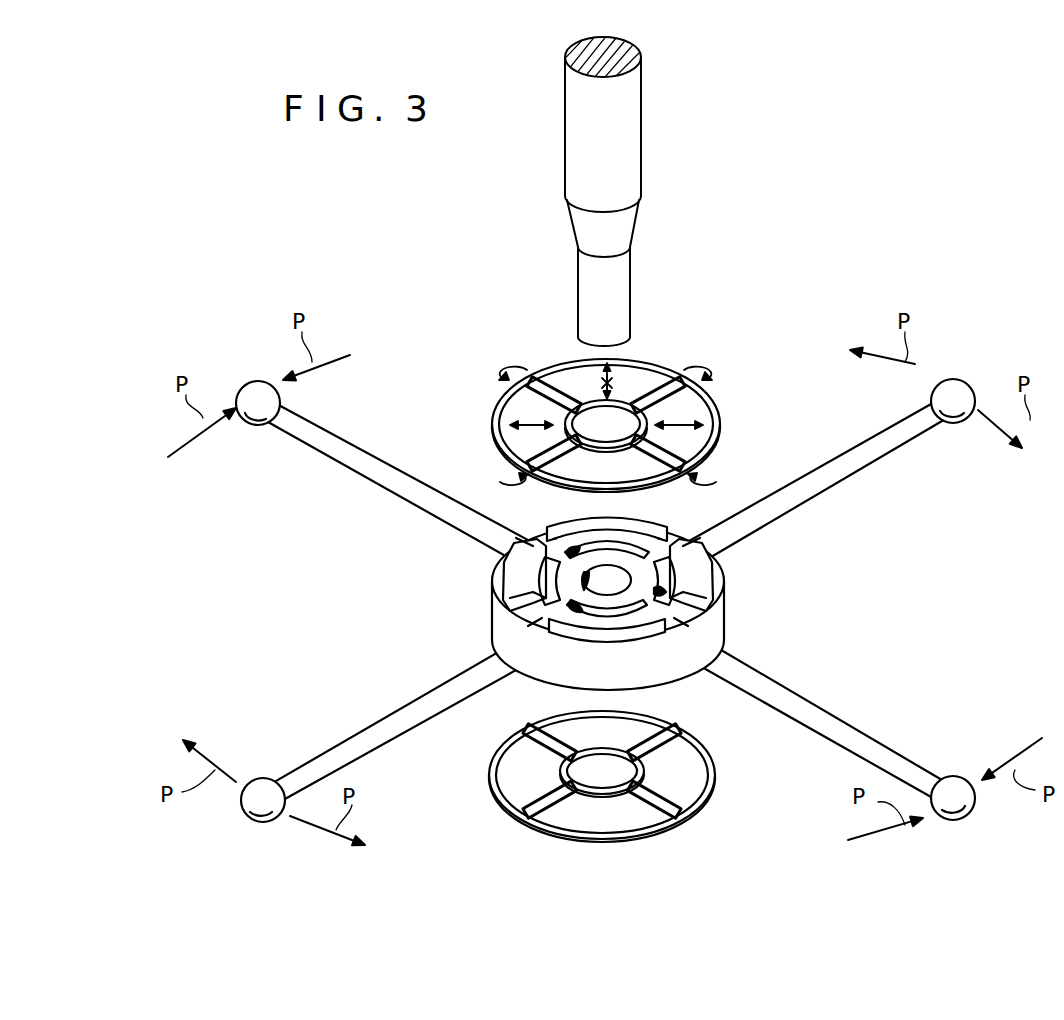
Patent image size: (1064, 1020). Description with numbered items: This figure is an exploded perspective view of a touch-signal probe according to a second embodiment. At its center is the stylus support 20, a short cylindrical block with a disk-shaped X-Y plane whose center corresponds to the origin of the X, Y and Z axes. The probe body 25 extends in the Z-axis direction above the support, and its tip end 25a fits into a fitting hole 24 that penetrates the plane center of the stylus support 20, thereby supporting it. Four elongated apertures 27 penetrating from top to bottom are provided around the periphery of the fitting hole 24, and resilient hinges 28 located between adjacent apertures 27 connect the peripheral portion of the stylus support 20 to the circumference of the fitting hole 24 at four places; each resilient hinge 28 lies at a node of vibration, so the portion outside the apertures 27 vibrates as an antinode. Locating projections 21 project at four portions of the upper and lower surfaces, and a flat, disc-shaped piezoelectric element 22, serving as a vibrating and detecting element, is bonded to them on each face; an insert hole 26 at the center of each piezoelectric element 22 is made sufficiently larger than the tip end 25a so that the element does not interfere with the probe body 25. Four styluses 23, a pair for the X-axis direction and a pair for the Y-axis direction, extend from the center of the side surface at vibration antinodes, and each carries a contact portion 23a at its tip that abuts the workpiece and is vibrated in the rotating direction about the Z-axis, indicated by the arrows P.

The stylus support 20 is at (734, 627).
The locating projection 21 is at (556, 524).
The flat piezoelectric element 22 is at (726, 400).
The stylus 23 is at (360, 437).
The contact portion 23a is at (245, 425).
The fitting hole 24 is at (605, 565).
The probe body 25 is at (630, 137).
The tip end 25a is at (624, 292).
The insert hole 26 is at (603, 430).
The aperture 27 is at (530, 590).
The resilient hinge 28 is at (545, 550).